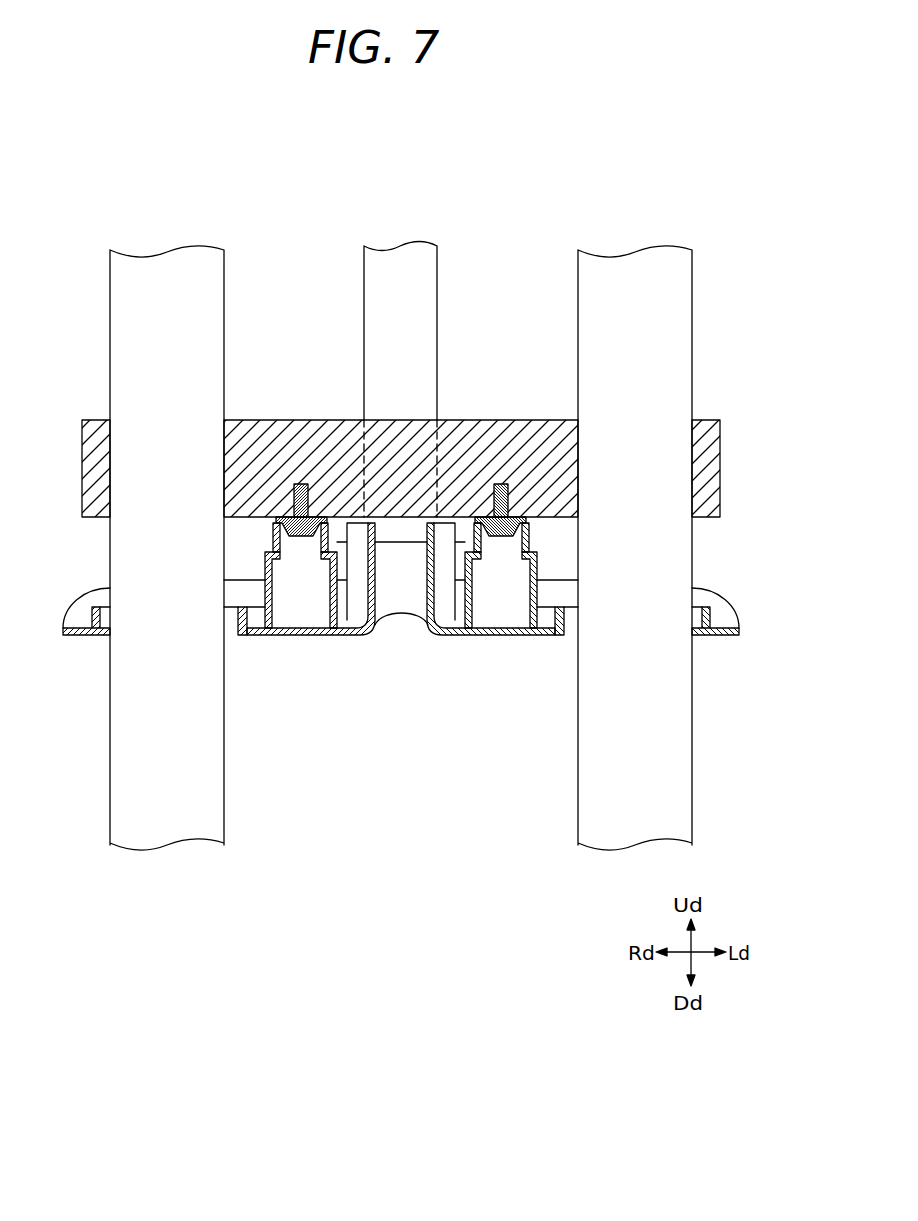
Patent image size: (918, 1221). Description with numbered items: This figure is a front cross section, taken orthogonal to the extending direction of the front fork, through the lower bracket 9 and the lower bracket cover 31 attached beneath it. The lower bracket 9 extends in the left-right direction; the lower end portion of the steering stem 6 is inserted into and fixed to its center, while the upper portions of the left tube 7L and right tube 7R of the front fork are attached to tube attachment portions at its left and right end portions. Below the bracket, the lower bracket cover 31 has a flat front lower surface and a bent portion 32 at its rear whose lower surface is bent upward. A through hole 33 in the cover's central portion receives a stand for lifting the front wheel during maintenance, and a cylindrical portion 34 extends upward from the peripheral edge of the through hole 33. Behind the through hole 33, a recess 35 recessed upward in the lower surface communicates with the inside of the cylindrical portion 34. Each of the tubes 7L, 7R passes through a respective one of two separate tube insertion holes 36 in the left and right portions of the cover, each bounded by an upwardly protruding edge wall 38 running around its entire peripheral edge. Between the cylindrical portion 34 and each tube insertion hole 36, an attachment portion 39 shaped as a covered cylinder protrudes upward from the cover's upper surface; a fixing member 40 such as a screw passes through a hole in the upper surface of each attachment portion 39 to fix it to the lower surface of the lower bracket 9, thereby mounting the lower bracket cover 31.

The steering stem 6 is at (428, 281).
The right tube 7R is at (123, 350).
The left tube 7L is at (683, 343).
The lower bracket 9 is at (327, 440).
The lower bracket cover 31 is at (401, 617).
The bent portion 32 is at (553, 595).
The through hole 33 is at (382, 630).
The cylindrical portion 34 is at (443, 635).
The recess 35 is at (401, 628).
The tube insertion hole 36 is at (232, 632).
The edge wall 38 is at (83, 610).
The attachment portion 39 is at (273, 543).
The fixing member 40 is at (300, 484).